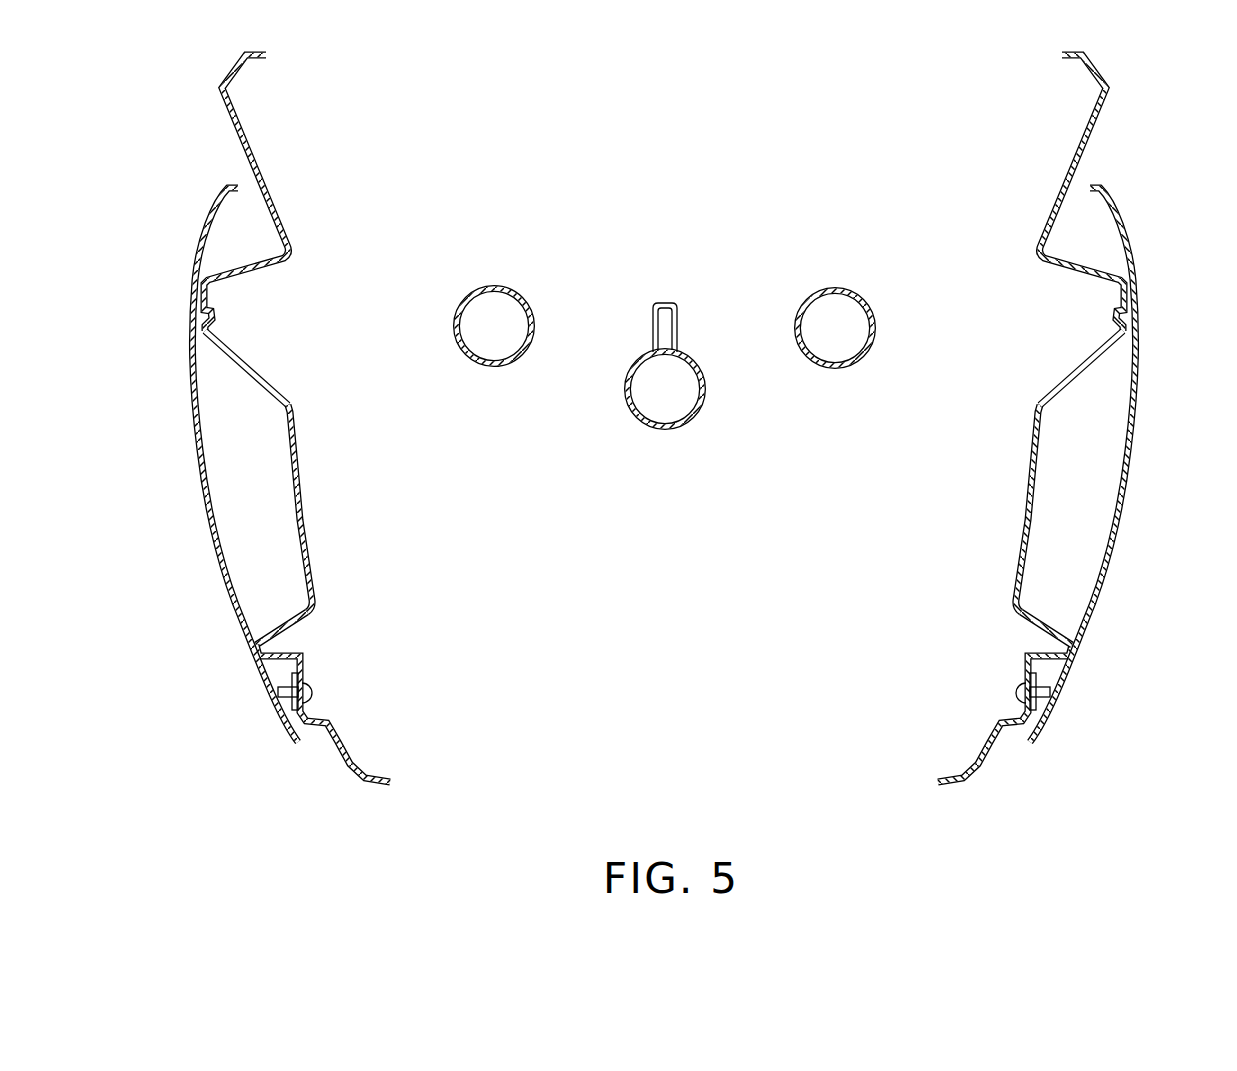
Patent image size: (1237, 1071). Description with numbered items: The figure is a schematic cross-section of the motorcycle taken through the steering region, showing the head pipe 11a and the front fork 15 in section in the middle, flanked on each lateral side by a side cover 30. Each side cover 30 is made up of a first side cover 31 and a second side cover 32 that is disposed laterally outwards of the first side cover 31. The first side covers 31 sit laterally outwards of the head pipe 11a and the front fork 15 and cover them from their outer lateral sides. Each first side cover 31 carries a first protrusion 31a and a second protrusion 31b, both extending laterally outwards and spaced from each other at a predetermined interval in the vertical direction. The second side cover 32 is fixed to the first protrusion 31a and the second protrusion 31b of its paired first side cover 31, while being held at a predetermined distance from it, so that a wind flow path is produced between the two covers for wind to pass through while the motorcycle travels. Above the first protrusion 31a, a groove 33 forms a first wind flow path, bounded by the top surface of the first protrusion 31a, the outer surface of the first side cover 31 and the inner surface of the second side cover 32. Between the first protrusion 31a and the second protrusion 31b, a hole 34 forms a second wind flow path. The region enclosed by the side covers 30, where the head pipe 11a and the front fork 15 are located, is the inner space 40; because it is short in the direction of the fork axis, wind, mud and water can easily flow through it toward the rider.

The head pipe 11a is at (680, 427).
The front fork 15 is at (853, 373).
The side cover 30 is at (1056, 418).
The first side cover 31 is at (1020, 570).
The first protrusion 31a is at (1080, 378).
The second protrusion 31b is at (1047, 637).
The second side cover 32 is at (1078, 680).
The groove 33 is at (1098, 258).
The hole 34 is at (1075, 505).
The inner space 40 is at (671, 603).